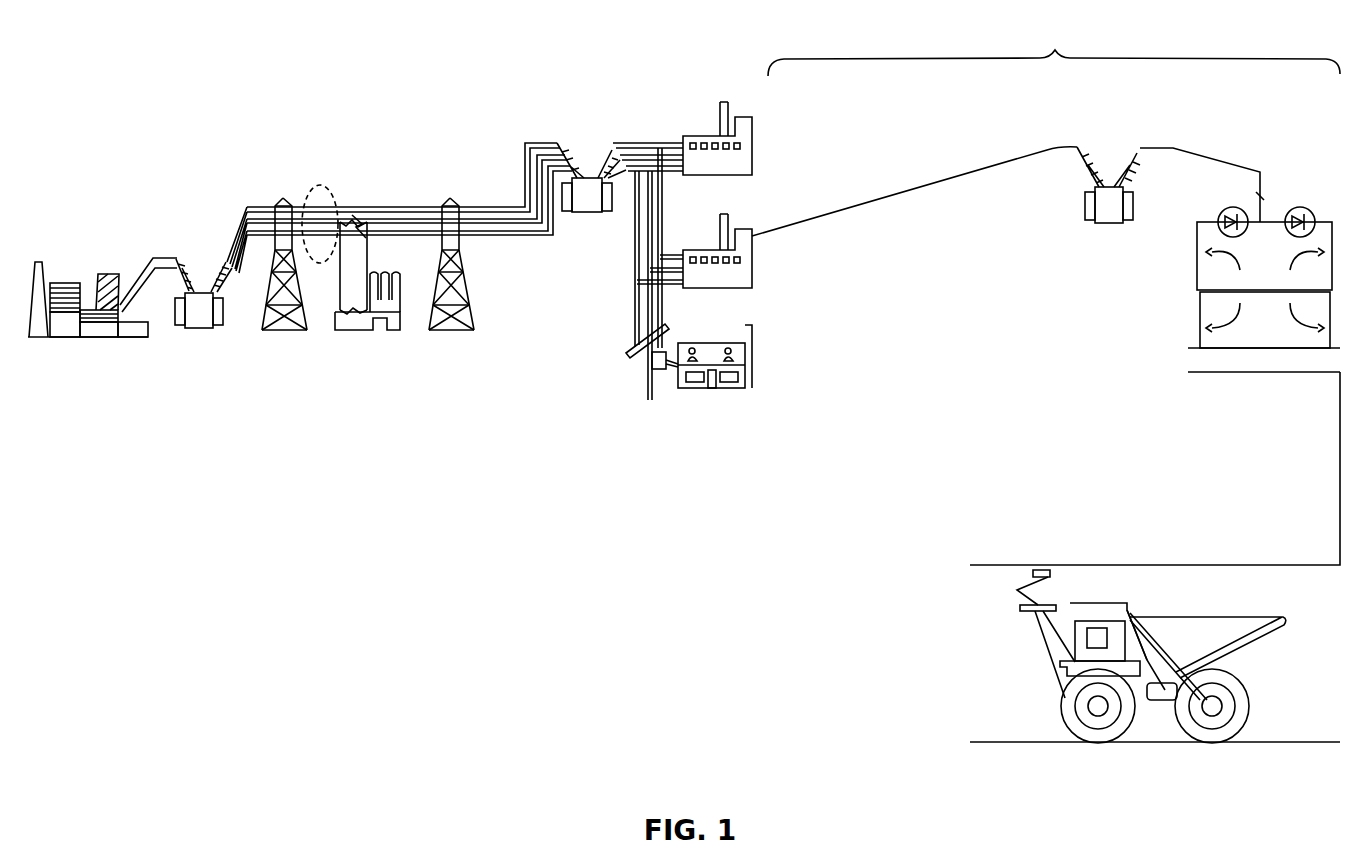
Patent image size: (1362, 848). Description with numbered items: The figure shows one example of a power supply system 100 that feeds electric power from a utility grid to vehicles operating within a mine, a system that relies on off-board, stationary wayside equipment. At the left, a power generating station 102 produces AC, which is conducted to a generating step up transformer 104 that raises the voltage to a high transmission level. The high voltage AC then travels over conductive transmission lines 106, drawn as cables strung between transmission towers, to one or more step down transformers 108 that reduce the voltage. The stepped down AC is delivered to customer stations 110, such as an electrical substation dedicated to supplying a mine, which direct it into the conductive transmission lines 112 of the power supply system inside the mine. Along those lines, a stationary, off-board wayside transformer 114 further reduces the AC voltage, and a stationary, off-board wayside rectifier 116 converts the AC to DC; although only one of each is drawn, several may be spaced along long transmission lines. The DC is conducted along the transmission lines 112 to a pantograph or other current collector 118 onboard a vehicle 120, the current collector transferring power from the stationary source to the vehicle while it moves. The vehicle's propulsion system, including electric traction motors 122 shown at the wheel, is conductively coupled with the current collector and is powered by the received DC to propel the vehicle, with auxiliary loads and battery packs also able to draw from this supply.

The power supply system 100 is at (1054, 47).
The power generating station 102 is at (79, 252).
The generating step up transformer 104 is at (192, 350).
The conductive transmission lines 106 is at (322, 184).
The step down transformers 108 is at (581, 143).
The customer stations 110 is at (779, 268).
The conductive transmission lines 112 is at (922, 184).
The stationary, off-board wayside transformers 114 is at (1100, 244).
The stationary, off-board wayside rectifiers 116 is at (1180, 358).
The current collectors 118 is at (1002, 593).
The vehicles 120 is at (1257, 670).
The electric traction motors 122 is at (1212, 716).